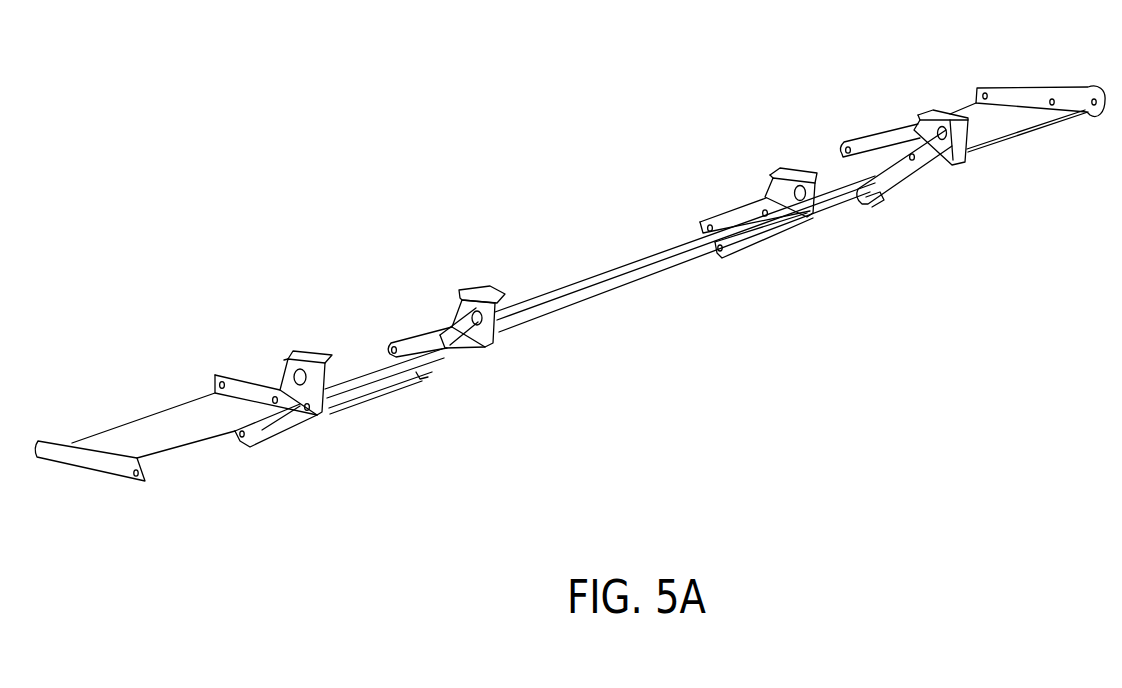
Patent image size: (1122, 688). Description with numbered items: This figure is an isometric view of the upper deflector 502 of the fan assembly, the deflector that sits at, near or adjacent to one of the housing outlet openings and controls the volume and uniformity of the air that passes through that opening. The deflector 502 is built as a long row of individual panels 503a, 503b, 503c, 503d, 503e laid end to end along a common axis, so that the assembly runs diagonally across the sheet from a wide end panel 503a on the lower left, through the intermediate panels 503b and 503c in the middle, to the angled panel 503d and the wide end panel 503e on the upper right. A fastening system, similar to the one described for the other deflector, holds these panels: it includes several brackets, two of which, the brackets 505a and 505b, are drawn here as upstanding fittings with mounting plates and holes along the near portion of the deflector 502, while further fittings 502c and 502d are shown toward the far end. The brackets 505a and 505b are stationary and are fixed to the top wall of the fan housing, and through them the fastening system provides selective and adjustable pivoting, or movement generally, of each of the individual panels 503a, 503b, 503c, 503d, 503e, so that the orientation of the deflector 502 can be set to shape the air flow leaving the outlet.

The deflector 502 is at (599, 130).
The bracket connector 502c is at (795, 170).
The bracket connector 502d is at (931, 112).
The panel 503a is at (207, 412).
The panel 503b is at (377, 393).
The panel 503c is at (543, 300).
The panel 503d is at (862, 210).
The panel 503e is at (1020, 126).
The bracket 505a is at (305, 352).
The bracket 505b is at (476, 290).